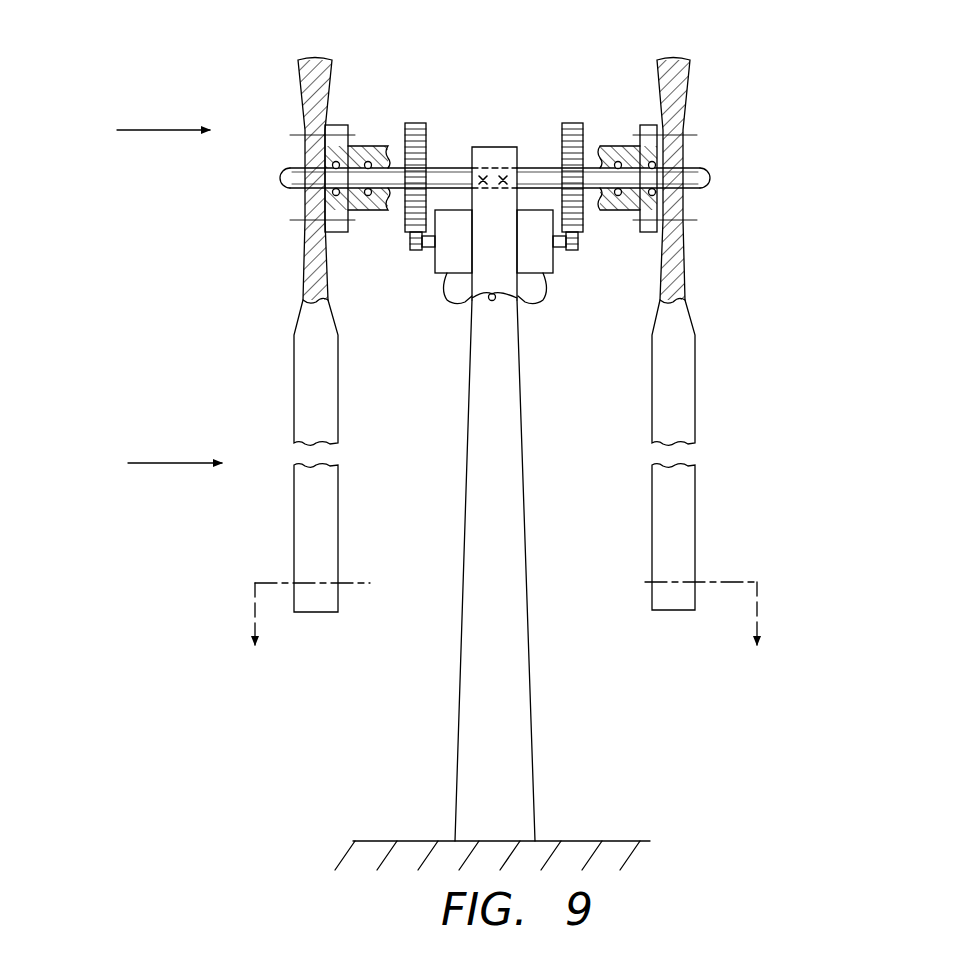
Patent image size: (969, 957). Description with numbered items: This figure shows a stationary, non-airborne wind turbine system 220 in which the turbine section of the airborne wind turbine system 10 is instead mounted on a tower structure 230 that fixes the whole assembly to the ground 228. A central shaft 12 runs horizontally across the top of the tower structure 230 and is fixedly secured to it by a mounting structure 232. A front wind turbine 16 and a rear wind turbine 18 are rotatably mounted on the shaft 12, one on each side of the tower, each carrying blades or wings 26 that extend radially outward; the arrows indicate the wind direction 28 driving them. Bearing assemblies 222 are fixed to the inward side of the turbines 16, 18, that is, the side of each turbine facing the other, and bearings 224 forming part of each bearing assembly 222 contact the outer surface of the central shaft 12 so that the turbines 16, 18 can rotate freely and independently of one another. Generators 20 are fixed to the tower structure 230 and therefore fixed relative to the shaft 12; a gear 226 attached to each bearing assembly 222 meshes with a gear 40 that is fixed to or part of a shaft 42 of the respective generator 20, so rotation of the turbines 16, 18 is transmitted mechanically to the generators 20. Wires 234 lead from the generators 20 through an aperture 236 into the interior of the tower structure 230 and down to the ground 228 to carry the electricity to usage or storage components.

The airborne wind turbine system 10 is at (500, 639).
The central shaft 12 is at (280, 170).
The front wind turbine 16 is at (294, 356).
The rear wind turbine 18 is at (695, 362).
The generators 20 is at (437, 275).
The blades or wings 26 is at (294, 523).
The wind direction 28 is at (180, 128).
The gear 40 is at (410, 249).
The shaft 42 is at (428, 247).
The stationary non-airborne wind turbine system 220 is at (760, 100).
The bearing assemblies 222 is at (397, 135).
The bearings 224 is at (366, 143).
The gear 226 is at (415, 123).
The ground 228 is at (573, 841).
The tower structure 230 is at (522, 432).
The mounting structure 232 is at (503, 172).
The wires 234 is at (537, 303).
The aperture 236 is at (489, 302).